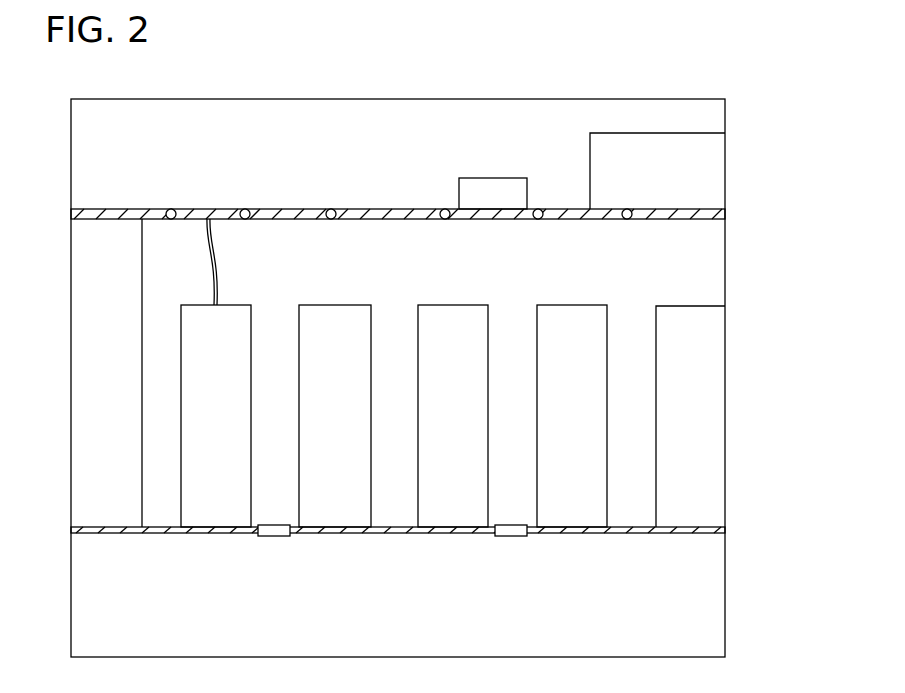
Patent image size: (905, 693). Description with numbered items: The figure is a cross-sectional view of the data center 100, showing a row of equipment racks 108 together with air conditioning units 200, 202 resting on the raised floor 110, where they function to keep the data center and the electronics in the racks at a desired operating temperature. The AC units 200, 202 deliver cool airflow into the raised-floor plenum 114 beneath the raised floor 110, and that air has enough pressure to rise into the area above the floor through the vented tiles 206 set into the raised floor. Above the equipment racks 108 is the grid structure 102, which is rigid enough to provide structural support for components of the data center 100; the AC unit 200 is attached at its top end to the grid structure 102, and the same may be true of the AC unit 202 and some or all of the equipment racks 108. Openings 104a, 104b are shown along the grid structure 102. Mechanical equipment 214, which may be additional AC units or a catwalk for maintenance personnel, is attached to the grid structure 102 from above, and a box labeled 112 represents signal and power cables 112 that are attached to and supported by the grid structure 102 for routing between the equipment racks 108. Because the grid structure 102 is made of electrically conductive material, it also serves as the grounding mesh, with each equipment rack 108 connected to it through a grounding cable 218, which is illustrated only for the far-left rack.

The data center 100 is at (485, 74).
The grid structure 102 is at (137, 186).
The ceiling opening 104a is at (204, 208).
The ceiling opening 104b is at (246, 208).
The equipment racks 108 is at (202, 407).
The raised floor 110 is at (117, 534).
The signal and power cables 112 is at (479, 203).
The raised-floor plenum 114 is at (394, 608).
The air conditioning (AC) unit 200 is at (96, 407).
The air conditioning (AC) unit 202 is at (679, 407).
The vented tiles 206 is at (272, 537).
The mechanical equipment 214 is at (644, 203).
The grounding cable 218 is at (222, 272).